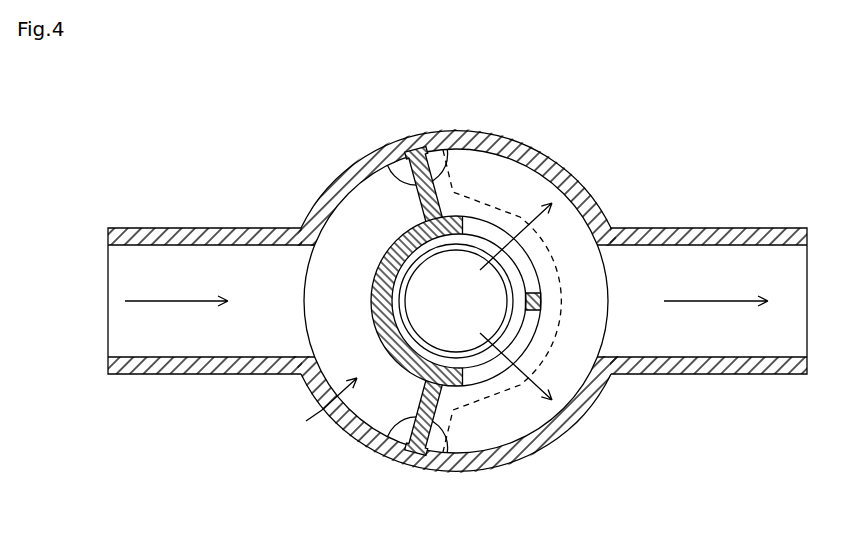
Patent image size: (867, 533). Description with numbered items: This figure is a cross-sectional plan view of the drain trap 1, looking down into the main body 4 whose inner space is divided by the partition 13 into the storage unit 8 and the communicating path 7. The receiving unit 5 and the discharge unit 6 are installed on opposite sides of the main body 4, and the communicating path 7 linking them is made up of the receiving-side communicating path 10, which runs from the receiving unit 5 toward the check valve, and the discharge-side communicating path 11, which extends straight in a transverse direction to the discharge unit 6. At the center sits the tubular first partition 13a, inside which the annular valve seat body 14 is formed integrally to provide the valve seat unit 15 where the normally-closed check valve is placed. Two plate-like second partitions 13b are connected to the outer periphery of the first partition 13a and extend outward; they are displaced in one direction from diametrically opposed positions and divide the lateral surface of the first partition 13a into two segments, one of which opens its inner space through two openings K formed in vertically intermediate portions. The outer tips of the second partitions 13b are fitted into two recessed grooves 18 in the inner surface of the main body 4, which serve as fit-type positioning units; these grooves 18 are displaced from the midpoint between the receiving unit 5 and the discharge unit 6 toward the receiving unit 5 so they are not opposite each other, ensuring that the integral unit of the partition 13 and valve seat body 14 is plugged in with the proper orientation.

The drain trap 1 is at (158, 132).
The main body 4 is at (570, 172).
The receiving unit 5 is at (205, 372).
The discharge unit 6 is at (748, 228).
The communicating path 7 is at (433, 301).
The storage unit 8 is at (323, 406).
The receiving-side communicating path 10 is at (367, 291).
The discharge-side communicating path 11 is at (538, 427).
The partition 13 is at (386, 301).
The first partition 13a is at (390, 245).
The second partitions 13b is at (437, 147).
The valve seat body 14 is at (400, 271).
The valve seat unit 15 is at (456, 301).
The recessed grooves 18 is at (393, 168).
The openings K is at (547, 245).